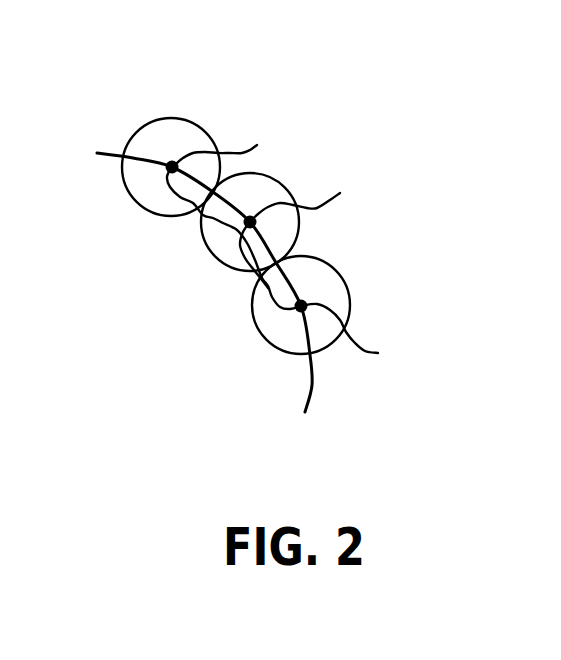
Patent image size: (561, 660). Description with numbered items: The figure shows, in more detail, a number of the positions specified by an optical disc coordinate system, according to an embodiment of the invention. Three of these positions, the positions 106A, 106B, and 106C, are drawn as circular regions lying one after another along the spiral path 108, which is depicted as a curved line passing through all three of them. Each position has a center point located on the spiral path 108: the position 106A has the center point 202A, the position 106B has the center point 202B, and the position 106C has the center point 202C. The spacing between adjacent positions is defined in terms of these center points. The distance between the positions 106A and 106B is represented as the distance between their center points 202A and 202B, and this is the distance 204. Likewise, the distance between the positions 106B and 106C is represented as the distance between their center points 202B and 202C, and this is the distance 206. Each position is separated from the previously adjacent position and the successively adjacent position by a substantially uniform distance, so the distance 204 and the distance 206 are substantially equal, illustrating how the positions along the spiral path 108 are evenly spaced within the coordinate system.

The spiral path 108 is at (110, 153).
The position 106A is at (336, 272).
The position 106B is at (293, 183).
The position 106C is at (192, 122).
The center point 202A is at (365, 335).
The center point 202B is at (318, 203).
The center point 202C is at (229, 145).
The distance 204 is at (257, 277).
The distance 206 is at (202, 215).